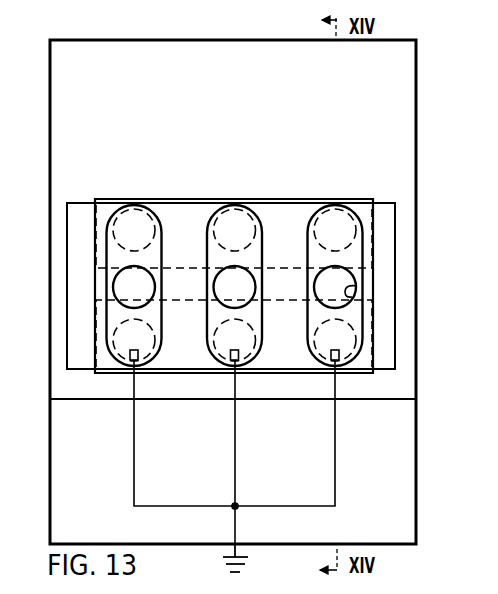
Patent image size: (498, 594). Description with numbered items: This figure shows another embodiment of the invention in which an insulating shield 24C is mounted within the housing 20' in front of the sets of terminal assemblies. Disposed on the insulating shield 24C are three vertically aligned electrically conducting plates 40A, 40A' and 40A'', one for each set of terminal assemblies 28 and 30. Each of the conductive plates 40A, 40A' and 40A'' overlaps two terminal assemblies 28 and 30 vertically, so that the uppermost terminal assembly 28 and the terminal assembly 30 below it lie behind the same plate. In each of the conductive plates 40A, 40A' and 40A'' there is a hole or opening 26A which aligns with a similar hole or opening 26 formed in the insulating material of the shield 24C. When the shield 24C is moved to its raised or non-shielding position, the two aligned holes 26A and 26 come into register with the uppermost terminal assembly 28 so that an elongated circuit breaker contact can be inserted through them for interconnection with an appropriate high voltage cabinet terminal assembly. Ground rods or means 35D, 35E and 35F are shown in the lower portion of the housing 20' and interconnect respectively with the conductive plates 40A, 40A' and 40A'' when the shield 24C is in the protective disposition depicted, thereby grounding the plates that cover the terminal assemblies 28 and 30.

The housing / receptacle box 20' is at (259, 292).
The insulating shield 24C is at (390, 202).
The hole or opening 26 is at (340, 272).
The hole or opening 26A is at (358, 289).
The terminal assembly 28 is at (339, 216).
The terminal assembly 30 is at (315, 358).
The ground rod or means 35D is at (335, 467).
The ground rod or means 35E is at (235, 463).
The ground rod or means 35F is at (134, 463).
The electrically conducting plate 40A is at (358, 392).
The electrically conducting plate 40A' is at (264, 347).
The electrically conducting plate 40A'' is at (163, 345).